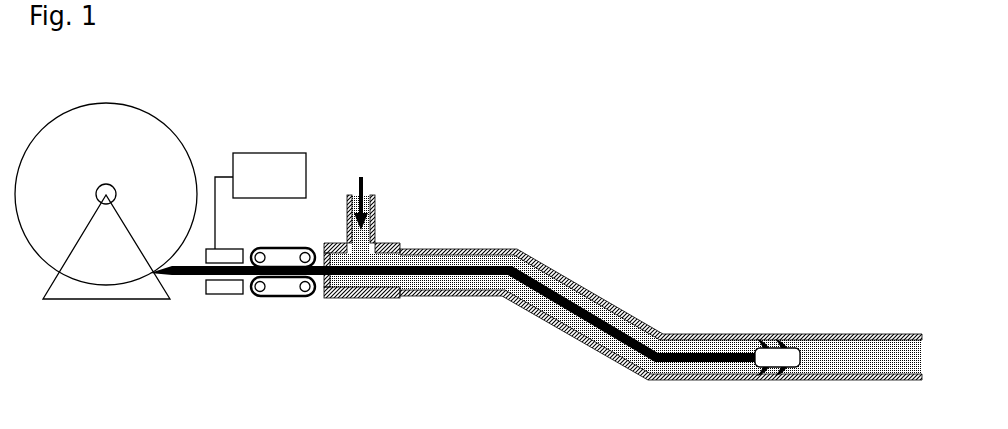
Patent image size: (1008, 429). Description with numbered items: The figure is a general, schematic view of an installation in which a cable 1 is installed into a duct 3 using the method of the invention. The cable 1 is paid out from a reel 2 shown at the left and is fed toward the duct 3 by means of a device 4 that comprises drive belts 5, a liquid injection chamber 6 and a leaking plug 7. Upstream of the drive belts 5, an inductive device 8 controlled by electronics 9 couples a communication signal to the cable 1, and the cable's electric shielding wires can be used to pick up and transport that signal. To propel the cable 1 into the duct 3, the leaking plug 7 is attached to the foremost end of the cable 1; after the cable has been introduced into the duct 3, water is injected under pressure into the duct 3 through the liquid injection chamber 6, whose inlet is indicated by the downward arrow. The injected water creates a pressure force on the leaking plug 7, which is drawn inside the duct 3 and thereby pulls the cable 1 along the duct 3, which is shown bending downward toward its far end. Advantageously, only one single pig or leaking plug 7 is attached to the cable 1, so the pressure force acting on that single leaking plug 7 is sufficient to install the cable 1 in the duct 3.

The cable 1 is at (180, 277).
The reel 2 is at (152, 143).
The duct 3 is at (553, 327).
The device 4 is at (284, 278).
The drive belts 5 is at (278, 247).
The liquid injection chamber 6 is at (338, 242).
The leaking plug 7 is at (795, 367).
The inductive device 8 is at (221, 248).
The electronics 9 is at (272, 152).